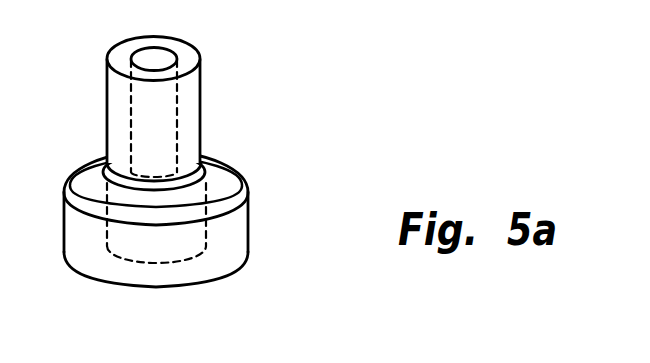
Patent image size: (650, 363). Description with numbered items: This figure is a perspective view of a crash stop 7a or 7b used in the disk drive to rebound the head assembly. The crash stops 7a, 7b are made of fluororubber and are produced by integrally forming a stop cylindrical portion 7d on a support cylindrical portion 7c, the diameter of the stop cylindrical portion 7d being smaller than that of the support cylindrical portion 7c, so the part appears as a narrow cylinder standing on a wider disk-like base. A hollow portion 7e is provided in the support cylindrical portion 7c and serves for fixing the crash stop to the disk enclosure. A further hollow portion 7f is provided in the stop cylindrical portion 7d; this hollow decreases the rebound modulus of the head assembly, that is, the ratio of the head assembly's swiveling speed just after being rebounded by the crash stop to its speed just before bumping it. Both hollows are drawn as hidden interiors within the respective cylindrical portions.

The crash stop 7a is at (295, 63).
The crash stop 7b is at (189, 187).
The support cylindrical portion 7c is at (240, 222).
The stop cylindrical portion 7d is at (197, 111).
The hollow portion 7e is at (139, 242).
The hollow portion 7f is at (145, 111).